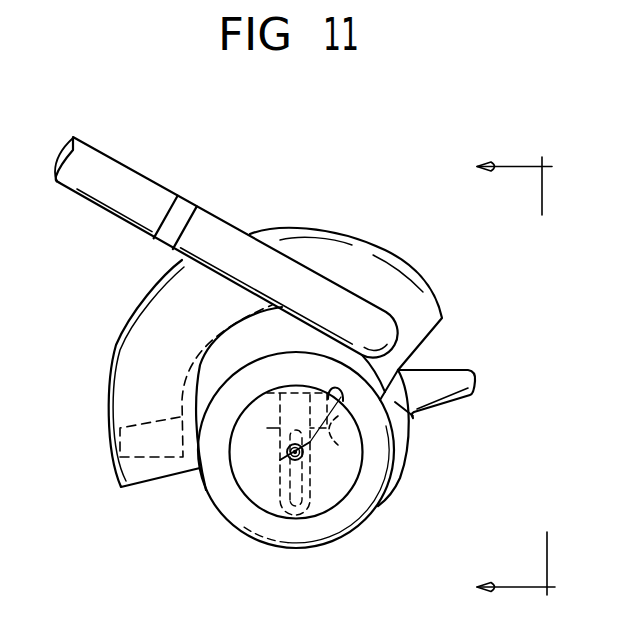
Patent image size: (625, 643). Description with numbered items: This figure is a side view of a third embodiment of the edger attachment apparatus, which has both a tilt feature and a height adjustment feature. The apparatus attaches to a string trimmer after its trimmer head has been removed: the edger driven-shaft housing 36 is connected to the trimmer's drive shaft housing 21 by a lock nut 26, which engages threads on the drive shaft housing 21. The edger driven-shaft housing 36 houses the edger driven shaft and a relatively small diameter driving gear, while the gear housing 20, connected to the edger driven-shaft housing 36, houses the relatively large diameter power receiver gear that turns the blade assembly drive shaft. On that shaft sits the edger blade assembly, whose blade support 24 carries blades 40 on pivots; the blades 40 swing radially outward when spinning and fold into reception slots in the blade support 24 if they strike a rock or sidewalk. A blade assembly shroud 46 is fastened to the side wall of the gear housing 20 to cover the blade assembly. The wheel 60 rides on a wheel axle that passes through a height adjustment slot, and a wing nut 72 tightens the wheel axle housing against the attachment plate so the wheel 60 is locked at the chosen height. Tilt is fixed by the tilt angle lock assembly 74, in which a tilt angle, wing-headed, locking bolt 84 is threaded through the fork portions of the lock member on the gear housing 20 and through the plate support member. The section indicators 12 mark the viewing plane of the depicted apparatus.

The section line 12 is at (530, 375).
The gear housing 20 is at (232, 356).
The drive shaft housing 21 is at (118, 178).
The blade support 24 is at (415, 417).
The lock nut 26 is at (183, 200).
The edger driven-shaft housing 36 is at (280, 275).
The blades 40 is at (463, 370).
The blade assembly shroud 46 is at (130, 368).
The wheel 60 is at (313, 549).
The wing nut 72 is at (282, 459).
The tilt angle lock assembly 74 is at (323, 451).
The tilt angle, wing-headed, locking bolt 84 is at (342, 398).